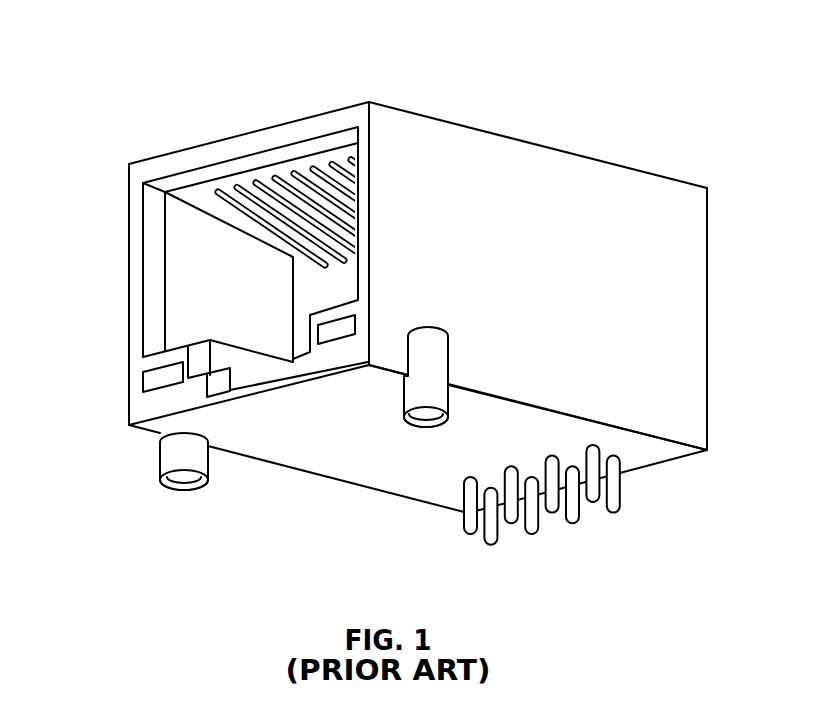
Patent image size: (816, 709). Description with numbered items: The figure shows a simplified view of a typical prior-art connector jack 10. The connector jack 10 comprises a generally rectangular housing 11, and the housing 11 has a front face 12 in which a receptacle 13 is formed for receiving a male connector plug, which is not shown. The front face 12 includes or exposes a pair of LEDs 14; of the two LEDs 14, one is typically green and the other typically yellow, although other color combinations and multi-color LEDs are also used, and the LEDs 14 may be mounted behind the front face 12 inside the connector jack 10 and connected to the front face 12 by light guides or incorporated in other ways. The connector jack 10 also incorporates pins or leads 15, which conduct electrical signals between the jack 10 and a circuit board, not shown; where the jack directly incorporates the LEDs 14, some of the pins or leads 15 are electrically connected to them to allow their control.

The connector jack 10 is at (389, 324).
The housing 11 is at (464, 213).
The front face 12 is at (173, 162).
The receptacle 13 is at (205, 215).
The LEDs 14 is at (155, 382).
The pins or leads 15 is at (617, 503).